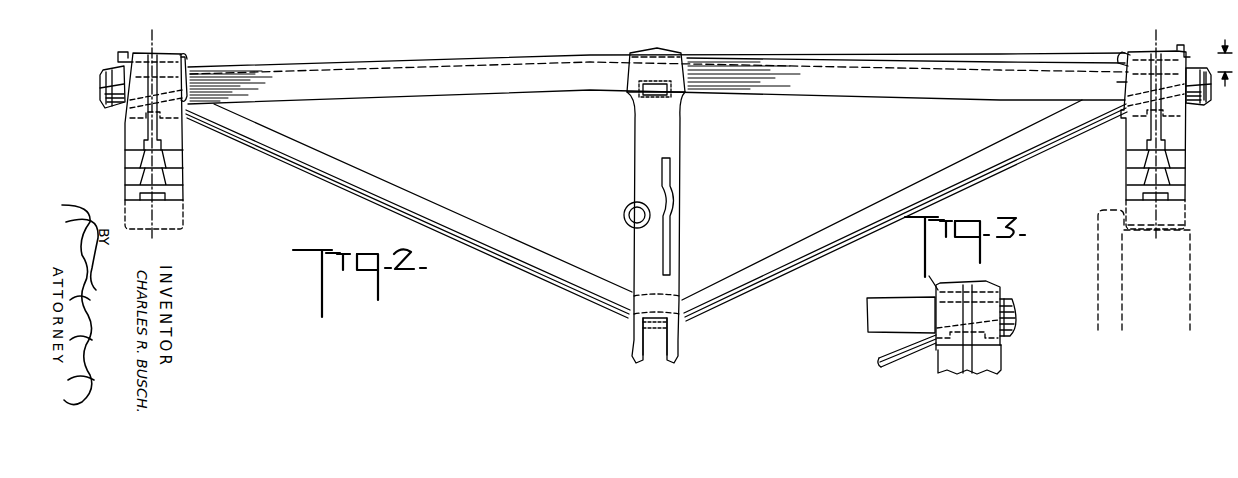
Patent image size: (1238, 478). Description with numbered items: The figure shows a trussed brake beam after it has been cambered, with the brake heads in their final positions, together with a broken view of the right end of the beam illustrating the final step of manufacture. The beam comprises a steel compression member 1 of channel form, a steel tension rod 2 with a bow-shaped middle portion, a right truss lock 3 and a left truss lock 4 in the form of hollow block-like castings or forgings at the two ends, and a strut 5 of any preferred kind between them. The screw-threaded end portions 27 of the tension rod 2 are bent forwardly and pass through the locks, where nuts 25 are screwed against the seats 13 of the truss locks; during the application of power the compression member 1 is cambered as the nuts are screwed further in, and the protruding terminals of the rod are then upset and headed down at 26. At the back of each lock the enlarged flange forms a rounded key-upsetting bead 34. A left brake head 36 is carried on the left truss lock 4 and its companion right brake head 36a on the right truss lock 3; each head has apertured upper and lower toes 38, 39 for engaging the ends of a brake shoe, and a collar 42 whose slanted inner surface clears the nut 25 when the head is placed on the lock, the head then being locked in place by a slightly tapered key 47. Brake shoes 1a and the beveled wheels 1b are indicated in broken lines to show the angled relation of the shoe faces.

In FIG. 2, the compression member 1 is at (517, 48).
In FIG. 3, the compression member 1 is at (866, 313).
In FIG. 2, the brake shoe 1a is at (1186, 220).
In FIG. 2, the wheel 1b is at (1188, 275).
In FIG. 2, the tension rod 2 is at (497, 244).
In FIG. 3, the tension rod 2 is at (879, 360).
In FIG. 2, the right truss lock 3 is at (190, 80).
In FIG. 2, the left truss lock 4 is at (1118, 83).
In FIG. 2, the strut 5 is at (642, 129).
In FIG. 2, the seat 13 is at (120, 93).
In FIG. 2, the nut 25 is at (121, 106).
In FIG. 3, the nut 25 is at (1009, 298).
In FIG. 3, the upset end 26 is at (1017, 312).
In FIG. 2, the screw-threaded end portion 27 is at (102, 80).
In FIG. 3, the screw-threaded end portion 27 is at (1006, 336).
In FIG. 2, the key-upsetting bead 34 is at (1120, 55).
In FIG. 2, the left brake head 36 is at (1121, 176).
In FIG. 3, the left brake head 36 is at (944, 364).
In FIG. 2, the right brake head 36a is at (186, 177).
In FIG. 2, the upper toe 38 is at (178, 158).
In FIG. 2, the lower toe 39 is at (183, 195).
In FIG. 3, the collar 42 is at (964, 274).
In FIG. 2, the key 47 is at (118, 52).